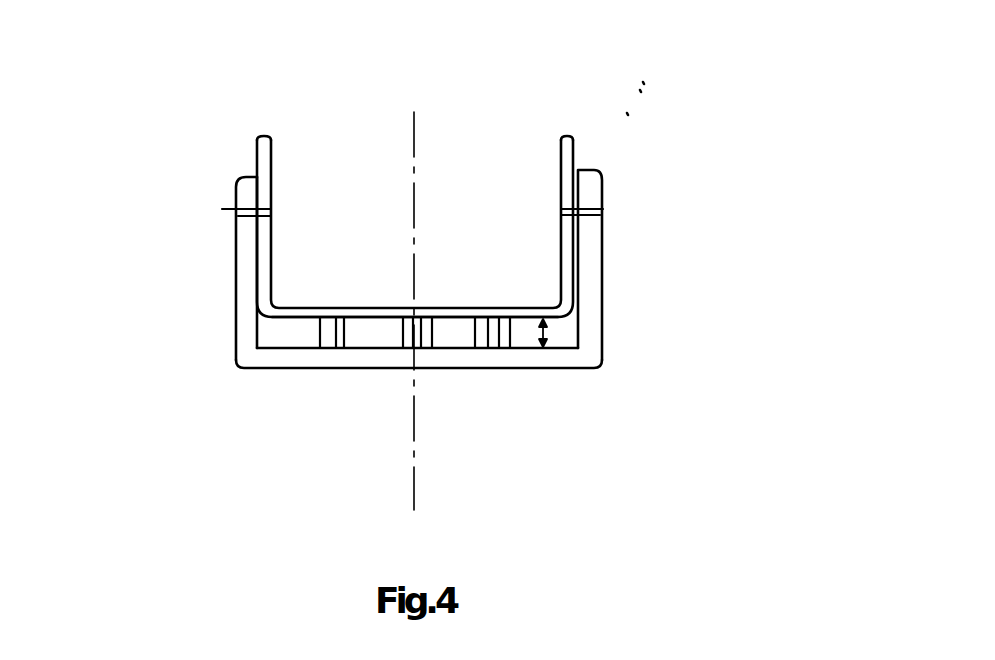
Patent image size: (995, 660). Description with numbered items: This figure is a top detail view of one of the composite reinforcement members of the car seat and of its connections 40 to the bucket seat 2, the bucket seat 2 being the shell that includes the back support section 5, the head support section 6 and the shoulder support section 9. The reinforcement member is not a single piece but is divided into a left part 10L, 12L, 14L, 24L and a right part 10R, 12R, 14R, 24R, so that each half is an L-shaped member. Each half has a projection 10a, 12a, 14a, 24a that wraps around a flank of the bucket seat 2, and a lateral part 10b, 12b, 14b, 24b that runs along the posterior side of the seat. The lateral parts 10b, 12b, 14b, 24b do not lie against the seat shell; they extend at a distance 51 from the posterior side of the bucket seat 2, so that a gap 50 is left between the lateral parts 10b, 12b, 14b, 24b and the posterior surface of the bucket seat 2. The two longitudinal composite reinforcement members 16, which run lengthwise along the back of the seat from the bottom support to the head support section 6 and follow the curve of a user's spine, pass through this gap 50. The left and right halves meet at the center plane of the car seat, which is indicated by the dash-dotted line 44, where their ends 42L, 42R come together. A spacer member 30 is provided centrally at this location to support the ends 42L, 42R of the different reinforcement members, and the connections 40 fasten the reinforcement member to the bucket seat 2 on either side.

The bucket seat 2 is at (270, 158).
The back support section 5 is at (643, 82).
The head support section 6 is at (640, 90).
The shoulder support section 9 is at (627, 113).
The dash-dotted line 44 is at (413, 140).
The spacer member 30 is at (403, 337).
The connections 40 is at (238, 209).
The longitudinal composite reinforcement members 16 is at (352, 350).
The end of left part 42L is at (404, 372).
The end of right part 42R is at (428, 374).
The gap 50 is at (453, 336).
The distance 51 is at (552, 313).
The left part of composite reinforcement member 10L is at (170, 316).
The left part of composite reinforcement member 12L is at (170, 316).
The left part of composite reinforcement member 24L is at (190, 316).
The left part of composite reinforcement member 14L is at (237, 337).
The right part of composite reinforcement member 10R is at (676, 269).
The right part of composite reinforcement member 12R is at (676, 269).
The right part of composite reinforcement member 24R is at (666, 269).
The right part of composite reinforcement member 14R is at (666, 269).
The projection 10a is at (440, 288).
The projection 12a is at (440, 288).
The projection 14a is at (440, 288).
The projection 24a is at (440, 288).
The lateral part 10b is at (460, 443).
The lateral part 12b is at (460, 443).
The lateral part 14b is at (460, 443).
The lateral part 24b is at (275, 360).